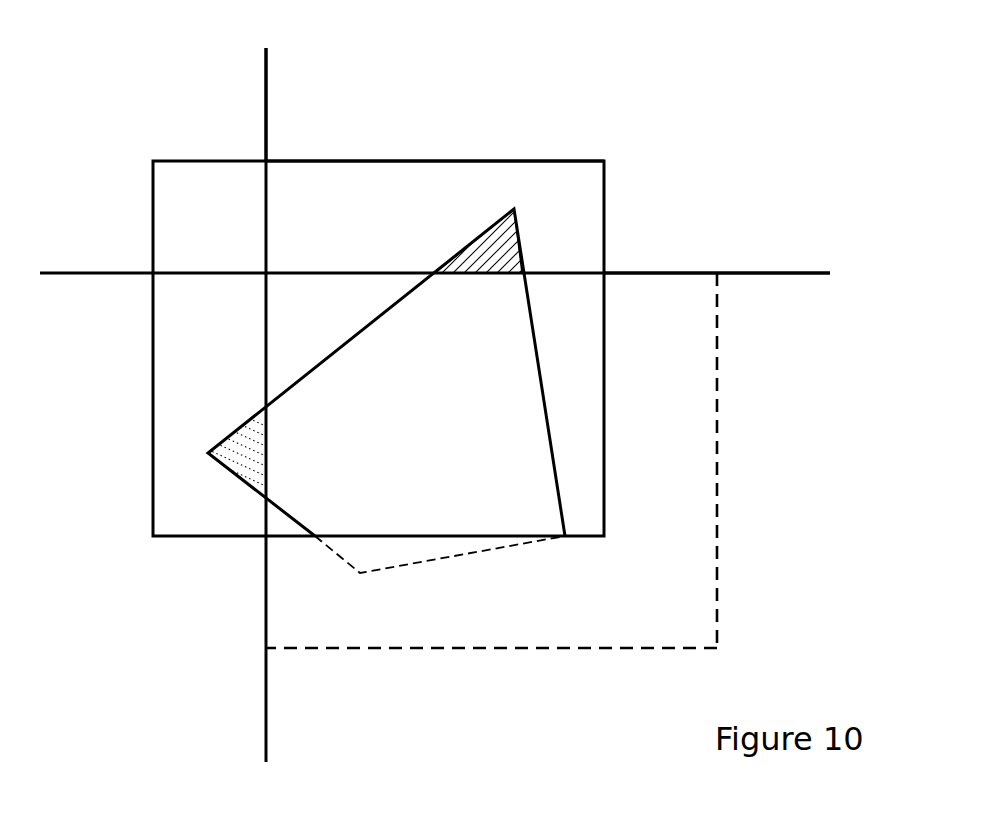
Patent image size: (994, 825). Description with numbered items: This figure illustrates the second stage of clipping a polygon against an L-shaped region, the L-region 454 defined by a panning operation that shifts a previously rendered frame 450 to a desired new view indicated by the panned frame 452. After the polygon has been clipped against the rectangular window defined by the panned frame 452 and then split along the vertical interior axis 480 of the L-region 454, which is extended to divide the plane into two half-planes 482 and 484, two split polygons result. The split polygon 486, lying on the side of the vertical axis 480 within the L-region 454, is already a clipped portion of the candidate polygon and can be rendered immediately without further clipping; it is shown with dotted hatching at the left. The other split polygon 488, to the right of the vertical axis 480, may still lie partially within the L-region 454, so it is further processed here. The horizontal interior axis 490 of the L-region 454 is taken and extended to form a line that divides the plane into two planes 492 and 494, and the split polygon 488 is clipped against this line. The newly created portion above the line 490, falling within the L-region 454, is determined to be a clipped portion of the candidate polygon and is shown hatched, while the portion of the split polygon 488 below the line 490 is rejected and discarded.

The previously rendered frame 450 is at (718, 502).
The panned frame 452 is at (150, 427).
The L-region 454 is at (425, 207).
The vertical interior axis 480 is at (268, 737).
The half-plane 482 is at (230, 104).
The half-plane 484 is at (435, 109).
The split polygon 486 is at (225, 463).
The split polygon 488 is at (460, 444).
The horizontal interior axis 490 is at (640, 275).
The plane 492 is at (773, 254).
The plane 494 is at (704, 295).